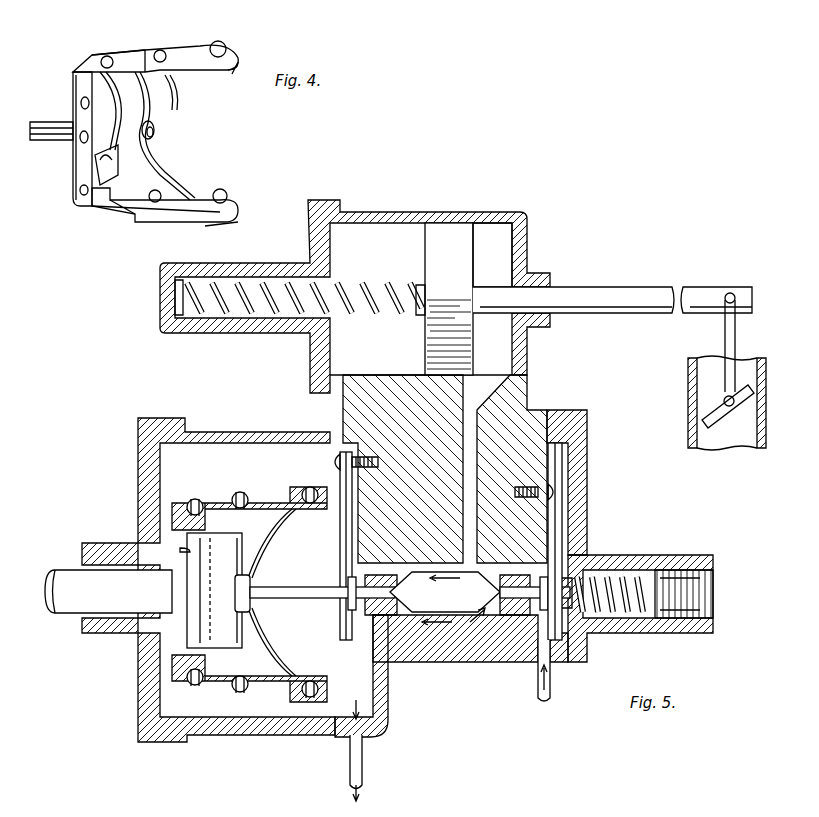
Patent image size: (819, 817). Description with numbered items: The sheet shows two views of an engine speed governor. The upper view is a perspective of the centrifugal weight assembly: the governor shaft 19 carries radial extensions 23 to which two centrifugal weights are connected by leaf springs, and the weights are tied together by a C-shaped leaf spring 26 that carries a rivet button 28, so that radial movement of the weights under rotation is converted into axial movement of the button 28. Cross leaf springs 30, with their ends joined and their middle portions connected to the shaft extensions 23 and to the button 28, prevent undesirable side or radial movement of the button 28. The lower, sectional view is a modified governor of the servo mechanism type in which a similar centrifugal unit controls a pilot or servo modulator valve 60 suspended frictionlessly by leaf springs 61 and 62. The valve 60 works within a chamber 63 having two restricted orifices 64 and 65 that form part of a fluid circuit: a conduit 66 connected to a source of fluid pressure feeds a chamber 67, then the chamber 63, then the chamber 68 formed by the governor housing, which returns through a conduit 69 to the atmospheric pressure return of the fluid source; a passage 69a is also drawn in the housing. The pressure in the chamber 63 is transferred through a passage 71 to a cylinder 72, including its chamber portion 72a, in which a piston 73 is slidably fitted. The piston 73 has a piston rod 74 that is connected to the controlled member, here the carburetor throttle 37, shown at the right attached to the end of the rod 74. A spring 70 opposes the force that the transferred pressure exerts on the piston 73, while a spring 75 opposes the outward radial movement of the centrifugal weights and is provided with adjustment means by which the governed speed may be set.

In FIG. 4, the governor shaft 19 is at (50, 136).
In FIG. 4, the radial extensions 23 is at (72, 178).
In FIG. 4, the C-shaped leaf spring 26 is at (168, 88).
In FIG. 4, the rivet button 28 is at (156, 132).
In FIG. 4, the cross leaf springs 30 is at (96, 116).
In FIG. 5, the carburetor throttle 37 is at (714, 410).
In FIG. 5, the servo modulator valve 60 is at (460, 613).
In FIG. 5, the leaf spring 61 is at (342, 540).
In FIG. 5, the leaf spring 62 is at (552, 518).
In FIG. 5, the chamber 63 is at (448, 625).
In FIG. 5, the restricted orifice 64 is at (396, 636).
In FIG. 5, the restricted orifice 65 is at (498, 622).
In FIG. 5, the conduit 66 is at (546, 700).
In FIG. 5, the chamber 67 is at (562, 553).
In FIG. 5, the housing chamber 68 is at (326, 714).
In FIG. 5, the conduit 69 is at (363, 773).
In FIG. 5, the passage 69a is at (336, 410).
In FIG. 5, the spring 70 is at (334, 285).
In FIG. 5, the passage 71 is at (506, 394).
In FIG. 5, the cylinder 72 is at (490, 228).
In FIG. 5, the cylinder chamber 72a is at (402, 236).
In FIG. 5, the piston 73 is at (440, 232).
In FIG. 5, the piston rod 74 is at (612, 290).
In FIG. 5, the spring 75 is at (648, 578).